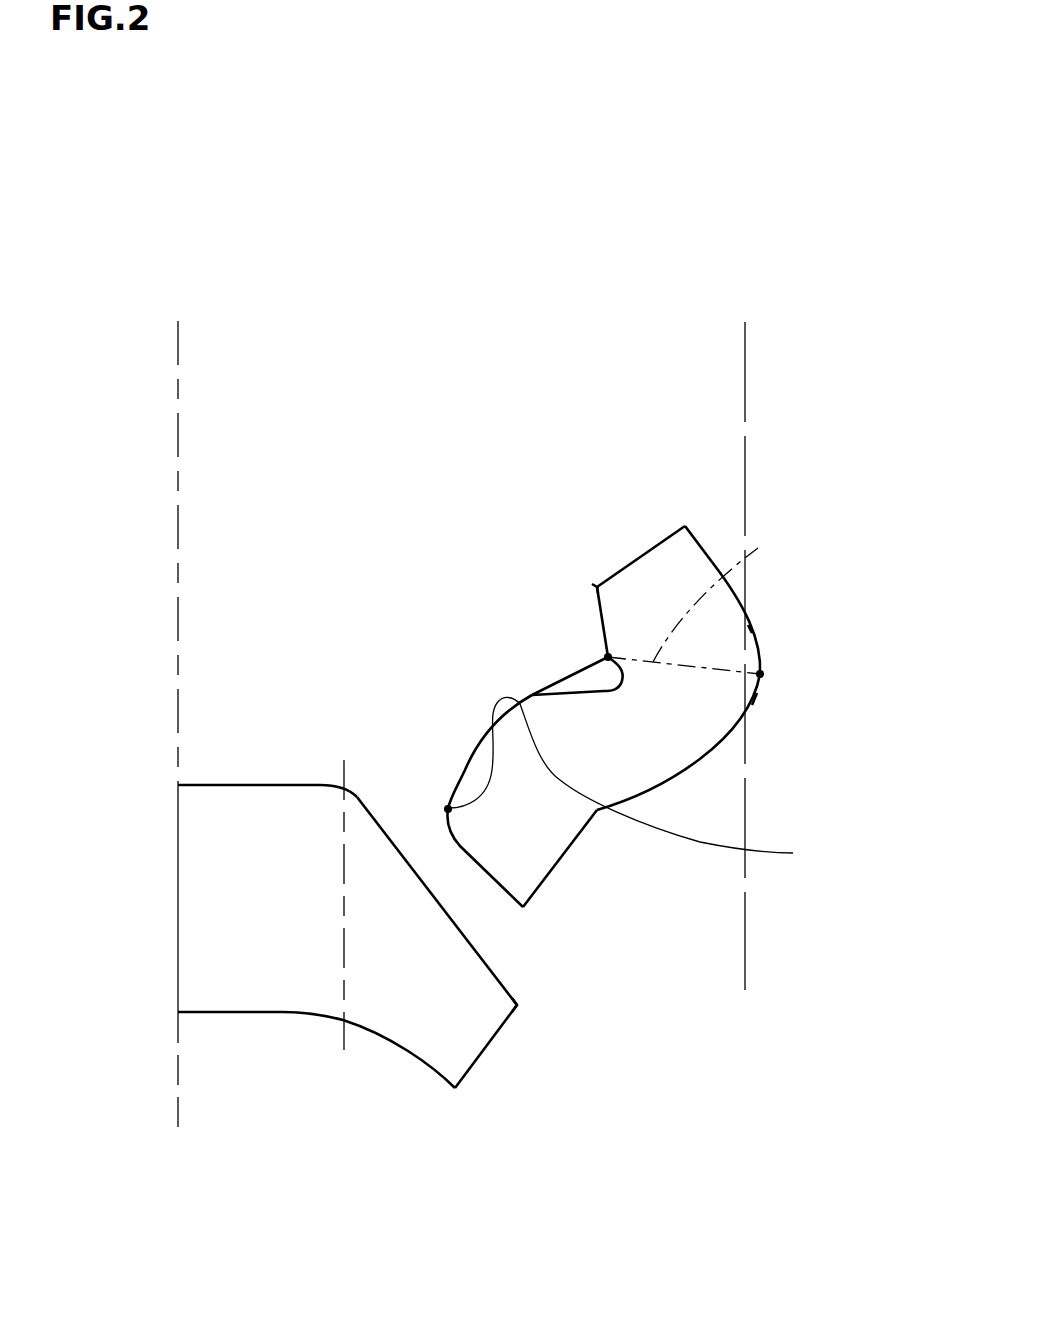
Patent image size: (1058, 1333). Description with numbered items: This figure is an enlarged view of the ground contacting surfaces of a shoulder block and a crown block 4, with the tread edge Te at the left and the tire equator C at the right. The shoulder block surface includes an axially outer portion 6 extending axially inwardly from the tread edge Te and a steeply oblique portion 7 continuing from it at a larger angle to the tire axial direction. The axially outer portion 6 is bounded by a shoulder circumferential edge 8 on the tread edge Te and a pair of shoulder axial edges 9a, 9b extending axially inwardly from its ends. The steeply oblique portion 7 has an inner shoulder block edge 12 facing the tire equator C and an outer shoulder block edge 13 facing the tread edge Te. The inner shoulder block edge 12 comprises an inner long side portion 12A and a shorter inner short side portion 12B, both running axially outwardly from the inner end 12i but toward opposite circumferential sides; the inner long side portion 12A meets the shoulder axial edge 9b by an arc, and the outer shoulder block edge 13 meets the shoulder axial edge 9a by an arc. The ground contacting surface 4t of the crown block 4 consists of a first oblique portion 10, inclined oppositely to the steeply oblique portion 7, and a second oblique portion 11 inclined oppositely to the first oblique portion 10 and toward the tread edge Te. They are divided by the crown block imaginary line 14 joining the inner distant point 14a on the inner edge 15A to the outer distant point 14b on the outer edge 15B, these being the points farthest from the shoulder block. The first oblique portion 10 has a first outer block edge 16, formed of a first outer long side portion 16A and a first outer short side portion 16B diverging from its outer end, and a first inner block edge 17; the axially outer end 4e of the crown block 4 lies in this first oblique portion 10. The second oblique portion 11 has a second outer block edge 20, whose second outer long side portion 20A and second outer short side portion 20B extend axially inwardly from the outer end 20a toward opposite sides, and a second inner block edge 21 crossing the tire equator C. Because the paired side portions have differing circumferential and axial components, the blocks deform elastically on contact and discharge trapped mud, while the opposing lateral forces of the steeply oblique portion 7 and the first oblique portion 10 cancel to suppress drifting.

The crown block 4 is at (695, 478).
The ground contacting surface 4t is at (829, 613).
The outer end 4e is at (486, 741).
The axially outer portion 6 is at (74, 822).
The steeply oblique portion 7 is at (598, 1211).
The shoulder circumferential edge 8 is at (178, 923).
The shoulder axial edge 9a is at (237, 1012).
The shoulder axial edge 9b is at (250, 785).
The first oblique portion 10 is at (688, 708).
The second oblique portion 11 is at (713, 640).
The inner shoulder block edge 12 is at (487, 1157).
The inner long side portion 12A is at (483, 947).
The inner short side portion 12B is at (495, 1040).
The inner end 12i is at (517, 1005).
The outer shoulder block edge 13 is at (423, 1063).
The crown block imaginary line 14 is at (758, 548).
The inner distant point 14a is at (760, 674).
The outer distant point 14b is at (608, 657).
The inner edge 15A is at (687, 765).
The outer edge 15B is at (646, 782).
The first outer block edge 16 is at (85, 588).
The first outer long side portion 16A is at (465, 765).
The first outer short side portion 16B is at (468, 857).
The first inner block edge 17 is at (680, 920).
The second outer block edge 20 is at (522, 391).
The second outer long side portion 20A is at (655, 545).
The second outer short side portion 20B is at (602, 622).
The outer end 20a is at (597, 587).
The second inner block edge 21 is at (708, 553).
The tire equator C is at (745, 640).
The tread edge Te is at (178, 344).